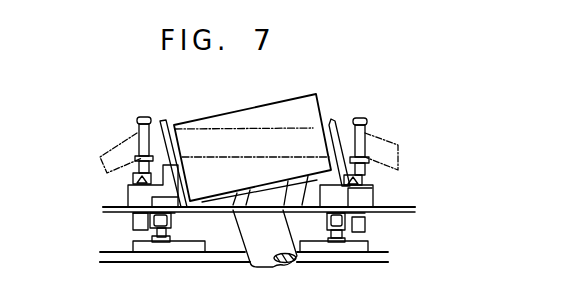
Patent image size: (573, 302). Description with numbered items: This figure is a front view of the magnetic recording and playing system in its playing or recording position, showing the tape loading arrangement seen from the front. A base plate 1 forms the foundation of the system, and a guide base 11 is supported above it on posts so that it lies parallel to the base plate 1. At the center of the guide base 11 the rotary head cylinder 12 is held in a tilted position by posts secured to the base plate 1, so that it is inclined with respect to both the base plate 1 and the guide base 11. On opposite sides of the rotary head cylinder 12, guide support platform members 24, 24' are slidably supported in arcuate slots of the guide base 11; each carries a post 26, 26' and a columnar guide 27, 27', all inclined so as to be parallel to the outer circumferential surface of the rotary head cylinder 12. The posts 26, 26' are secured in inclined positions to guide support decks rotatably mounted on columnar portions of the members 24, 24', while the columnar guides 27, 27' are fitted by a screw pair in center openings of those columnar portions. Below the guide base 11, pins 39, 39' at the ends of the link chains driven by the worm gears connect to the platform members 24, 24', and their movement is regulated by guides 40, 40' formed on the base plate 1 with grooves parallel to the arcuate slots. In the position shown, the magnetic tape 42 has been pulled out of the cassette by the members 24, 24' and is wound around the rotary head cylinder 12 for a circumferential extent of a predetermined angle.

The base plate 1 is at (205, 263).
The guide base 11 is at (396, 213).
The rotary head cylinder 12 is at (250, 118).
The guide support platform member 24 is at (120, 186).
The guide support platform member 24' is at (380, 188).
The post 26 is at (175, 146).
The post 26' is at (343, 136).
The columnar guide 27 is at (127, 143).
The columnar guide 27' is at (378, 143).
The pin 39 is at (135, 229).
The pin 39' is at (330, 227).
The guide 40 is at (169, 268).
The guide 40' is at (334, 268).
The magnetic tape 42 is at (407, 147).